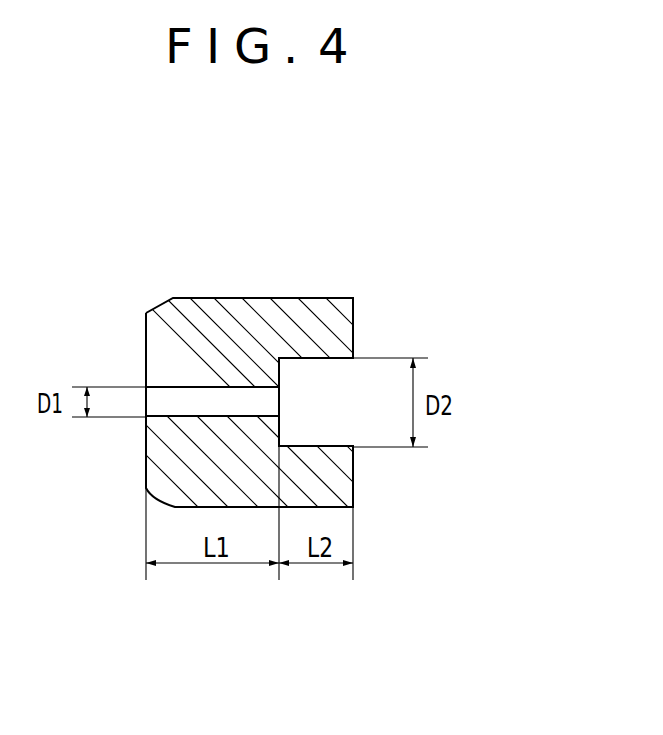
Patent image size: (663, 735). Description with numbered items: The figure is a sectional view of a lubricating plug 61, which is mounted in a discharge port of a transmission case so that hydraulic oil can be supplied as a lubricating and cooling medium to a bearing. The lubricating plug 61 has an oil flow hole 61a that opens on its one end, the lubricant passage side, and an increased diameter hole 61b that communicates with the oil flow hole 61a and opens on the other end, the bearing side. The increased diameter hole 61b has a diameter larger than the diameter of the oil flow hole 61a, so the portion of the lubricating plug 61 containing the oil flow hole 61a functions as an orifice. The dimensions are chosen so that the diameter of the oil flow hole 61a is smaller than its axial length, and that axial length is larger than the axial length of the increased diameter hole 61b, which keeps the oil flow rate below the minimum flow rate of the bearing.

The lubricating plug 61 is at (145, 330).
The oil flow hole 61a is at (190, 417).
The increased diameter hole 61b is at (339, 446).